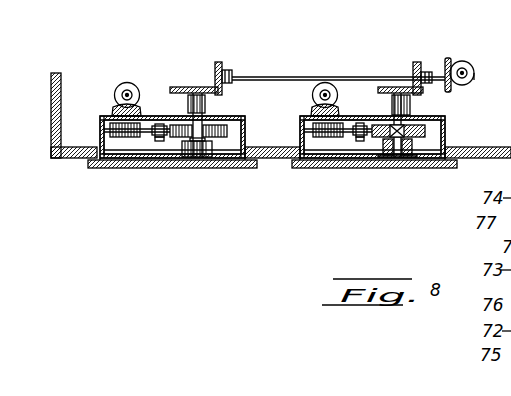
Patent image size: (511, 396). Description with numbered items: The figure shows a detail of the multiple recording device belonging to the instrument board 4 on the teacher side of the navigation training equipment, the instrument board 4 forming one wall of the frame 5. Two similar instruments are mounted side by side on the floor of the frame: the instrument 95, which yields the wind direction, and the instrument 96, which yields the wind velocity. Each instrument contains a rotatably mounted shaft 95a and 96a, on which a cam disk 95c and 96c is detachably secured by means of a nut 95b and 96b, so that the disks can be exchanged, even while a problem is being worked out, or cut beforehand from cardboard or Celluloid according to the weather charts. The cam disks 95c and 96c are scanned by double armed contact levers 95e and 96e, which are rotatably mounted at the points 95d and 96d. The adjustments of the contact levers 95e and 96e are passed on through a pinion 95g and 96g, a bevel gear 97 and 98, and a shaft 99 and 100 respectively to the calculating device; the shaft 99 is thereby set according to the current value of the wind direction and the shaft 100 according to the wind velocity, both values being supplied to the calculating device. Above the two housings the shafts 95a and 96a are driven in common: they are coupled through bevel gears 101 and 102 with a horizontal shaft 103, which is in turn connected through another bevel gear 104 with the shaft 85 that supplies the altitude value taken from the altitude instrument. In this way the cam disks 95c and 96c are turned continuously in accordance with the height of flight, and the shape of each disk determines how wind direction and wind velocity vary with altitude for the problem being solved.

The instrument board 4 is at (67, 159).
The frame 5 is at (53, 110).
The instrument 96 is at (119, 163).
The shaft 96a is at (205, 108).
The nut 96b is at (197, 158).
The cam disk 96c is at (227, 130).
The pivot mounting of contact lever 96d is at (159, 141).
The double armed contact lever 96e is at (157, 126).
The pinion 96g is at (104, 130).
The bevel gear 98 is at (114, 97).
The shaft 100 is at (127, 82).
The bevel gear 102 is at (215, 72).
The shaft 103 is at (293, 66).
The shaft 99 is at (337, 83).
The bevel gear 97 is at (339, 96).
The bevel gear 101 is at (405, 73).
The bevel gear 104 is at (451, 64).
The shaft 85 is at (476, 77).
The instrument 95 is at (422, 160).
The shaft 95a is at (408, 113).
The nut 95b is at (397, 165).
The cam disk 95c is at (426, 130).
The pivot mounting of contact lever 95d is at (360, 141).
The double armed contact lever 95e is at (357, 125).
The pinion 95g is at (318, 128).